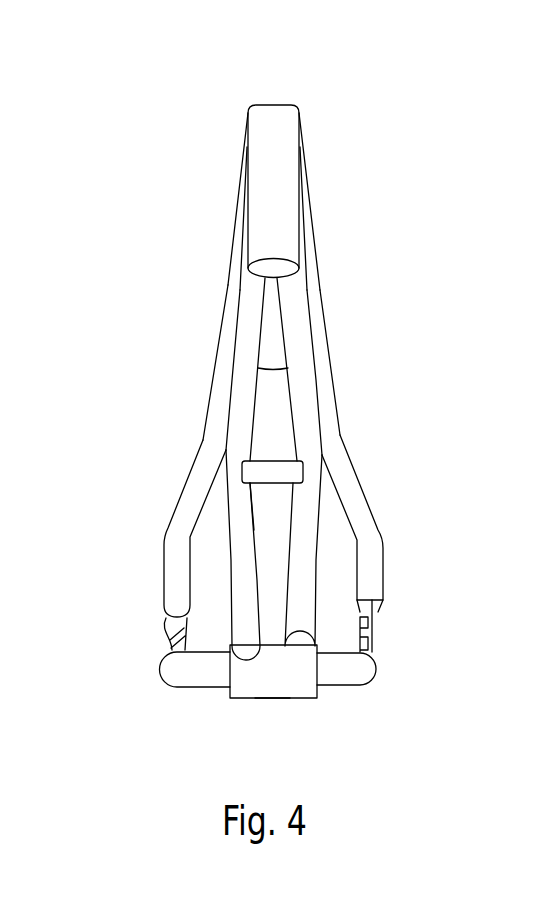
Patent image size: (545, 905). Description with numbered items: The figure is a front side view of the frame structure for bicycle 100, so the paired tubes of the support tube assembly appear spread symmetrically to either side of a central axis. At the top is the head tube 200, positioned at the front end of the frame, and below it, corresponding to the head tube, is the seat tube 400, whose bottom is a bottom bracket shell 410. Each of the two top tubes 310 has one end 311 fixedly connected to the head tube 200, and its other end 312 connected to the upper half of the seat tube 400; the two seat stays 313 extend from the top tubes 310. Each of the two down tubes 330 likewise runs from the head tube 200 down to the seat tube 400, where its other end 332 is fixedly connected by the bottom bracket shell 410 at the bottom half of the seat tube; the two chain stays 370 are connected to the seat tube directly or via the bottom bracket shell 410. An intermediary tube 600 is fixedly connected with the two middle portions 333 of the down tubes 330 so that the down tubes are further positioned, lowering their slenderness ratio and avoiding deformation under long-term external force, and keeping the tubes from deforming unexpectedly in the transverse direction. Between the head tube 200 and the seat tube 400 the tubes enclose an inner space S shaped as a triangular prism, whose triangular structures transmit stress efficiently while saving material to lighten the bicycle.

The frame structure for bicycle 100 is at (98, 130).
The head tube 200 is at (272, 140).
The top tube 310 is at (333, 382).
The end of top tube 311 is at (302, 188).
The other end of top tube 312 is at (333, 452).
The seat stay 313 is at (373, 532).
The down tube 330 is at (352, 555).
The other end of down tube 332 is at (313, 688).
The middle portion of down tube 333 is at (313, 470).
The chain stay 370 is at (368, 667).
The seat tube 400 is at (272, 412).
The bottom bracket shell 410 is at (272, 690).
The intermediary tube 600 is at (250, 507).
The inner space S is at (258, 360).